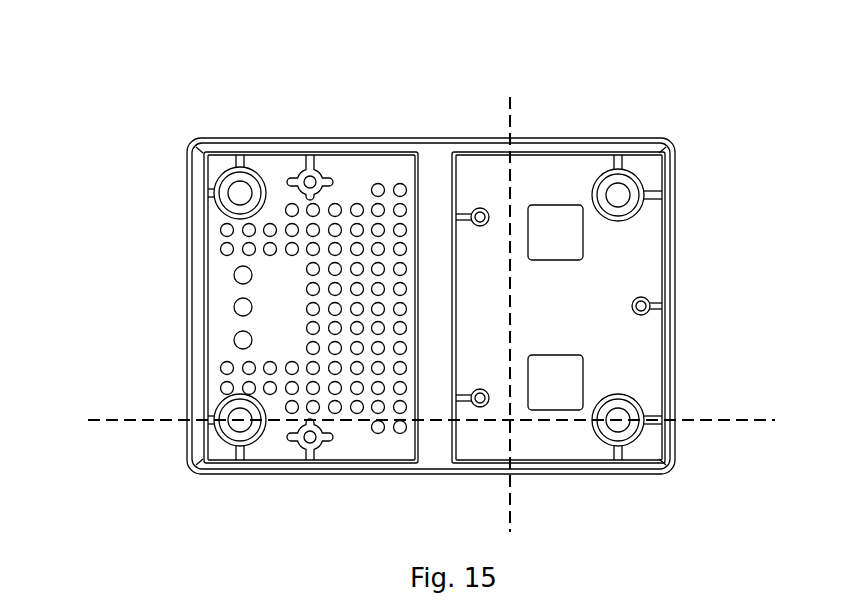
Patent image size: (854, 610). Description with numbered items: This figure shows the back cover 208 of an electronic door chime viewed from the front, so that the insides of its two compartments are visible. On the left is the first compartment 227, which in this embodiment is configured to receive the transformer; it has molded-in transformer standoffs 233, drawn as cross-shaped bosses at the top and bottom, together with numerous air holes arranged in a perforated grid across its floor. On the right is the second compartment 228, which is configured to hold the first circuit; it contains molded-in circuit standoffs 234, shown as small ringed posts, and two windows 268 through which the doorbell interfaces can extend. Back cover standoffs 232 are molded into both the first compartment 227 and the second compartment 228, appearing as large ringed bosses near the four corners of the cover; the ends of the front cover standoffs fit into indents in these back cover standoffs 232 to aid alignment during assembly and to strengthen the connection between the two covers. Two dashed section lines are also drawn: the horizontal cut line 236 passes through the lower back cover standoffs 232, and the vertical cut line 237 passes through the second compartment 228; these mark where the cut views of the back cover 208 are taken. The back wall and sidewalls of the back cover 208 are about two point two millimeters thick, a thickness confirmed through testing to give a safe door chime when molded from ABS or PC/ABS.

The back cover 208 is at (120, 102).
The first compartment 227 is at (278, 295).
The second compartment 228 is at (562, 293).
The back cover standoffs 232 is at (230, 185).
The transformer standoffs 233 is at (313, 180).
The circuit standoffs 234 is at (480, 208).
The cut line 236 is at (702, 423).
The cut line 237 is at (512, 497).
The windows 268 is at (560, 228).